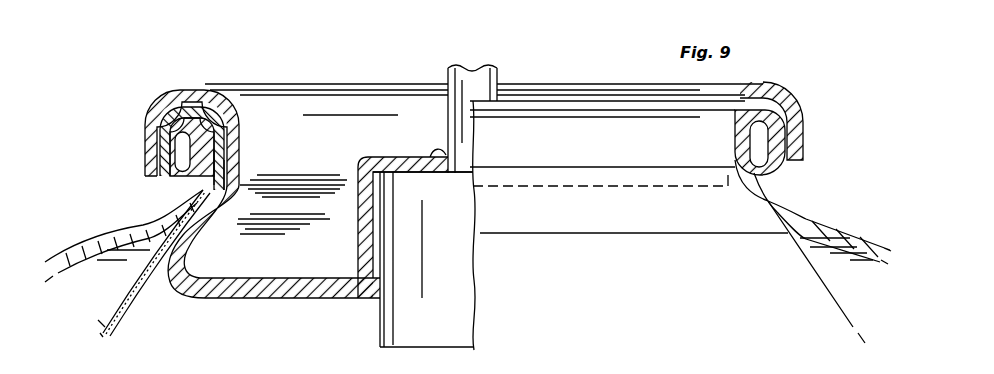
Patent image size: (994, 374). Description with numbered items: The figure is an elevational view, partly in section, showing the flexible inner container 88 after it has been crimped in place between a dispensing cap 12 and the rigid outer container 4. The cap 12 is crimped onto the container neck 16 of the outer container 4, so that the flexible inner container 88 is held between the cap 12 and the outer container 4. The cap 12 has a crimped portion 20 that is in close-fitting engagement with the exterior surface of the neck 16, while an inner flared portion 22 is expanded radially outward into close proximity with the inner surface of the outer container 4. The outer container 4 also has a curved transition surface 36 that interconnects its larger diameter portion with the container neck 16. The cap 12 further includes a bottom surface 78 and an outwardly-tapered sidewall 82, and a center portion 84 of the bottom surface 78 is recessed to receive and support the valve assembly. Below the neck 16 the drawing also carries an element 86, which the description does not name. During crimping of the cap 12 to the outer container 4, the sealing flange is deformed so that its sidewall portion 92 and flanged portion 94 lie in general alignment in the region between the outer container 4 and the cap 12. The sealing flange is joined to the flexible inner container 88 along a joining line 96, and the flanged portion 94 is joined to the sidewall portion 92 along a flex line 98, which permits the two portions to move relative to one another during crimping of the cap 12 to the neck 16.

The rigid outer container 4 is at (838, 210).
The cap 12 is at (563, 78).
The container neck 16 is at (172, 184).
The crimped portion 20 is at (147, 132).
The inner flared portion 22 is at (184, 295).
The curved transition surface 36 is at (88, 241).
The bottom surface 78 is at (272, 280).
The outwardly-tapered sidewall 82 is at (200, 218).
The center portion 84 is at (350, 243).
The curled edge 86 is at (777, 212).
The flexible inner container 88 is at (99, 315).
The sidewall portion 92 is at (235, 142).
The flanged portion 94 is at (191, 92).
The joining line 96 is at (228, 178).
The flex line 98 is at (170, 142).